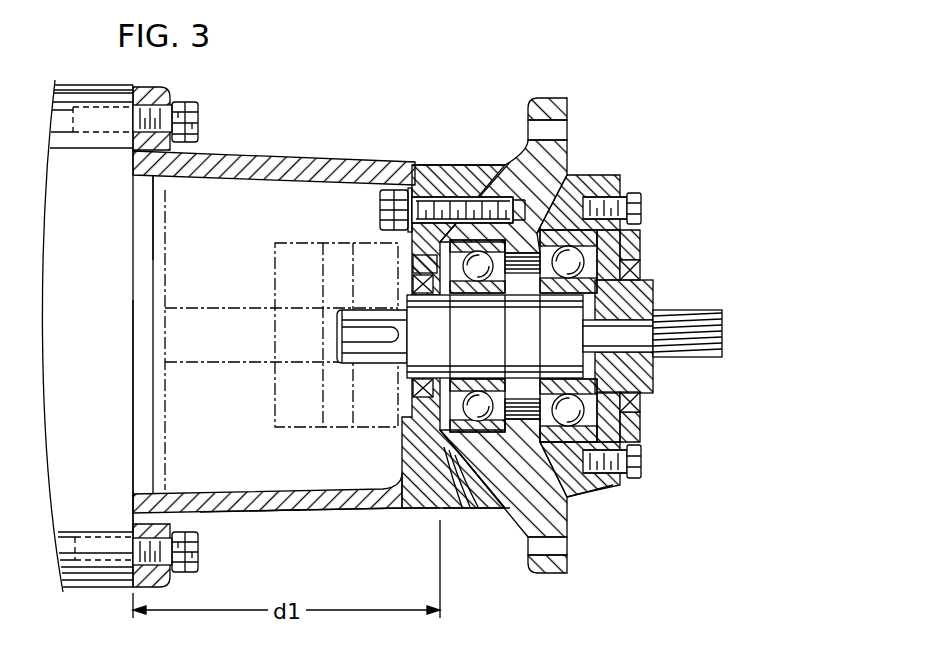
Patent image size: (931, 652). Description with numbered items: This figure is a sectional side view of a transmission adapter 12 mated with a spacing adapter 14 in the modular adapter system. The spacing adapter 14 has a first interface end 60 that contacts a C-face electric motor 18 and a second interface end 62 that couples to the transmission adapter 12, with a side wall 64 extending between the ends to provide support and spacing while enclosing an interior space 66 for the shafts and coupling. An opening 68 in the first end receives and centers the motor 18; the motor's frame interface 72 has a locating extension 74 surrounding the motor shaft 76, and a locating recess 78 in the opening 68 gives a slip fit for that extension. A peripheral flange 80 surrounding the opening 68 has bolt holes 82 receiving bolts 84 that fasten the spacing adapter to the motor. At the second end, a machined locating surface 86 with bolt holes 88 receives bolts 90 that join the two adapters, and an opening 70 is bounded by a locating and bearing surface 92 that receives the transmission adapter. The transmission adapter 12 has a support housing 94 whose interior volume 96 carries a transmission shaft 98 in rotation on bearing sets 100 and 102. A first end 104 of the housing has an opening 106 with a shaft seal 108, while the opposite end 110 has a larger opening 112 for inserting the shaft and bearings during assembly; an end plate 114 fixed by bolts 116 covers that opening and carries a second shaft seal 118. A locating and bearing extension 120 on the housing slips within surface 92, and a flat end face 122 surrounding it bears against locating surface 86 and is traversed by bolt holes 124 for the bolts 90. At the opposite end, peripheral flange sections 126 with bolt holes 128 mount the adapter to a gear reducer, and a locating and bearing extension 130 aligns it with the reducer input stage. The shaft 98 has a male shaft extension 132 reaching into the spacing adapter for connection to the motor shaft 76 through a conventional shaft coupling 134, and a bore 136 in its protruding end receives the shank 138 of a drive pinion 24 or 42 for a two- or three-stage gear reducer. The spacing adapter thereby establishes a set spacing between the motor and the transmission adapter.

The transmission adapter 12 is at (596, 519).
The spacing adapter 14 is at (253, 524).
The C-face electric motor 18 is at (82, 83).
The drive pinion 24 is at (738, 351).
The drive pinion 42 is at (738, 351).
The first interface end 60 is at (132, 148).
The second interface end 62 is at (430, 200).
The side wall 64 is at (297, 510).
The interior space 66 is at (353, 510).
The opening 68 is at (140, 443).
The opening 70 is at (398, 437).
The frame interface 72 is at (168, 234).
The locating extension 74 is at (213, 157).
The motor shaft 76 is at (195, 337).
The locating recess 78 is at (152, 185).
The peripheral flange 80 is at (176, 97).
The bolt holes 82 is at (140, 88).
The bolts 84 is at (160, 98).
The locating surface 86 is at (460, 507).
The bolt holes 88 is at (423, 195).
The bolts 90 is at (380, 207).
The locating and bearing surface 92 is at (416, 250).
The support housing 94 is at (565, 182).
The interior volume 96 is at (598, 186).
The transmission shaft 98 is at (612, 312).
The bearing set 100 is at (508, 512).
The bearing set 102 is at (630, 478).
The first end 104 is at (440, 205).
The opening 106 is at (414, 270).
The shaft seal 108 is at (412, 388).
The opposite end 110 is at (612, 183).
The opening 112 is at (636, 236).
The end plate 114 is at (634, 250).
The bolts 116 is at (634, 463).
The second shaft seal 118 is at (643, 403).
The locating and bearing extension 120 is at (423, 507).
The flat end face 122 is at (470, 508).
The bolt holes 124 is at (505, 178).
The peripheral flange sections 126 is at (570, 574).
The bolt holes 128 is at (560, 127).
The locating and bearing extension 130 is at (583, 503).
The male shaft extension 132 is at (337, 350).
The shaft coupling 134 is at (275, 388).
The bore 136 is at (660, 355).
The shank 138 is at (612, 340).